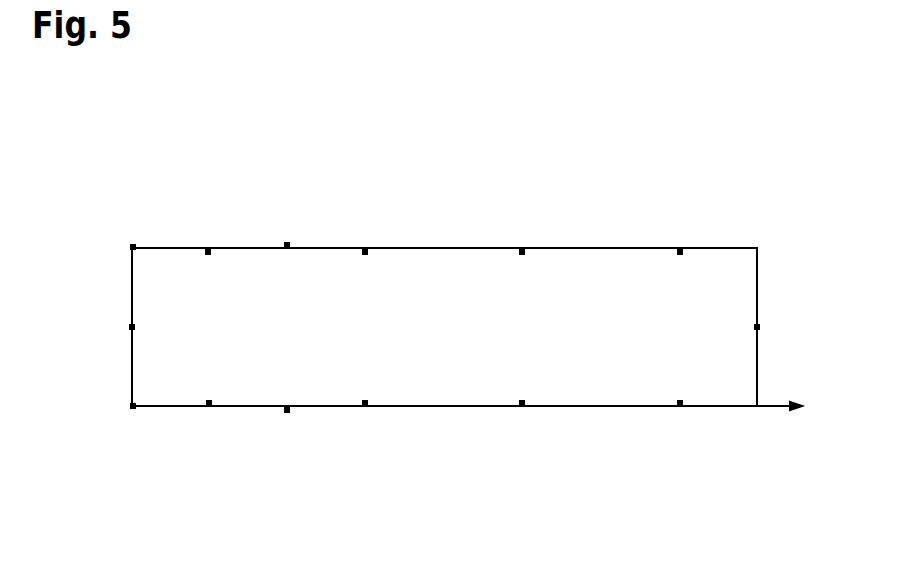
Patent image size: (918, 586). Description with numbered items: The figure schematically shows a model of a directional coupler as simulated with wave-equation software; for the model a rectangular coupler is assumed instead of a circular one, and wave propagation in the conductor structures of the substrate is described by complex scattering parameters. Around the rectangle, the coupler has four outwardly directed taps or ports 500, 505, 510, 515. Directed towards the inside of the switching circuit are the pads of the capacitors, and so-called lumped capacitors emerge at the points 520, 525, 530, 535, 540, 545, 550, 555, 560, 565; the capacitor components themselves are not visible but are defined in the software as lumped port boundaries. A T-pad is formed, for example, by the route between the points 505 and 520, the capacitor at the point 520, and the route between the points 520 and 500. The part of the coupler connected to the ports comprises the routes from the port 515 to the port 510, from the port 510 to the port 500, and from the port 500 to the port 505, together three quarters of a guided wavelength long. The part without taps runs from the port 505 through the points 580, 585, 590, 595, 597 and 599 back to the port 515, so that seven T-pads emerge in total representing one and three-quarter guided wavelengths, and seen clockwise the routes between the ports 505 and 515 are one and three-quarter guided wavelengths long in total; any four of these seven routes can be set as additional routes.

The first port 500 is at (133, 244).
The second port 505 is at (287, 245).
The third port 510 is at (133, 408).
The fourth port 515 is at (287, 408).
The capacitor pad 520 is at (208, 250).
The capacitor pad 525 is at (365, 250).
The capacitor pad 530 is at (522, 250).
The capacitor pad 535 is at (680, 250).
The capacitor pad 540 is at (761, 327).
The capacitor pad 545 is at (680, 408).
The capacitor pad 550 is at (522, 408).
The capacitor pad 555 is at (365, 408).
The capacitor pad 560 is at (209, 408).
The capacitor pad 565 is at (128, 327).
The route point 580 is at (440, 248).
The route point 585 is at (607, 248).
The route point 590 is at (757, 248).
The route point 595 is at (757, 408).
The route point 597 is at (610, 408).
The route point 599 is at (443, 408).